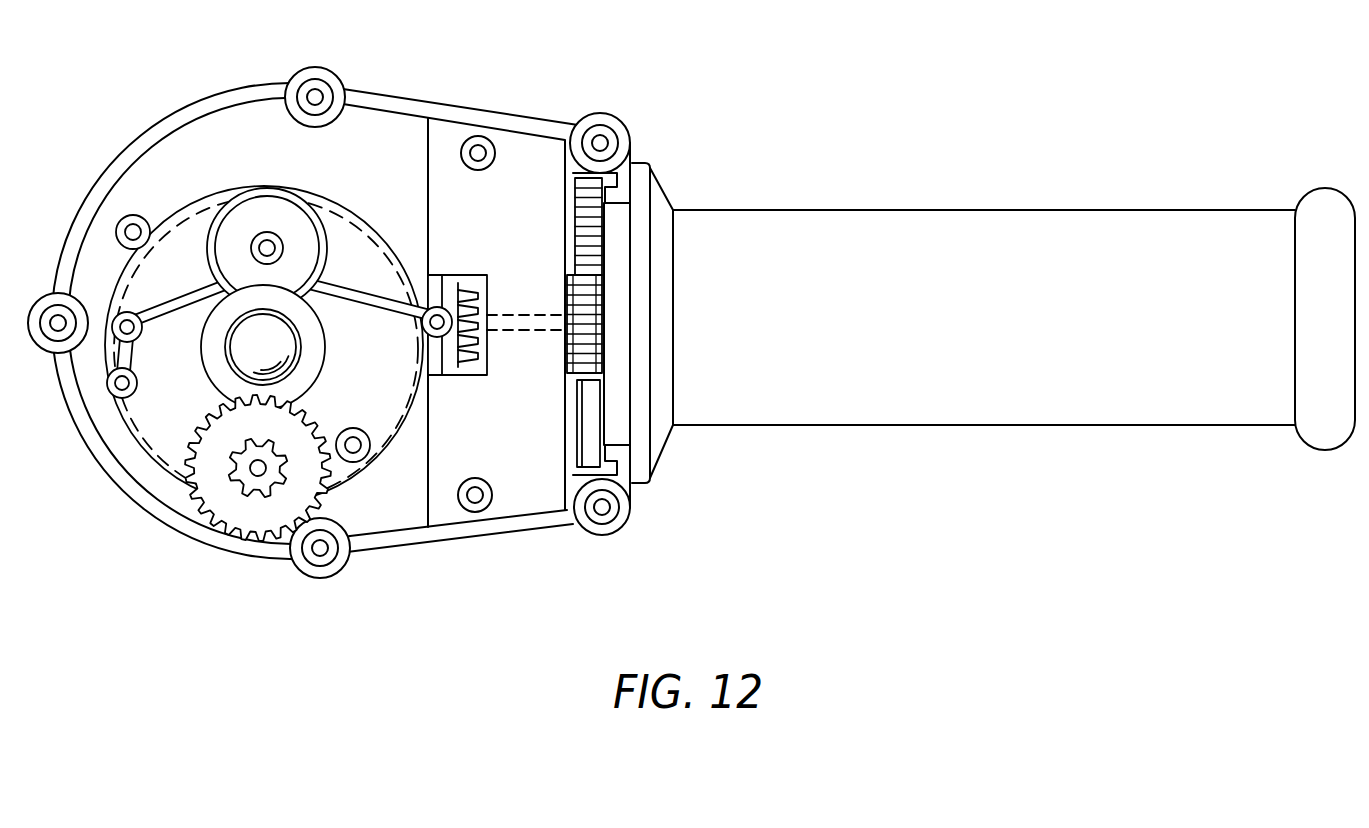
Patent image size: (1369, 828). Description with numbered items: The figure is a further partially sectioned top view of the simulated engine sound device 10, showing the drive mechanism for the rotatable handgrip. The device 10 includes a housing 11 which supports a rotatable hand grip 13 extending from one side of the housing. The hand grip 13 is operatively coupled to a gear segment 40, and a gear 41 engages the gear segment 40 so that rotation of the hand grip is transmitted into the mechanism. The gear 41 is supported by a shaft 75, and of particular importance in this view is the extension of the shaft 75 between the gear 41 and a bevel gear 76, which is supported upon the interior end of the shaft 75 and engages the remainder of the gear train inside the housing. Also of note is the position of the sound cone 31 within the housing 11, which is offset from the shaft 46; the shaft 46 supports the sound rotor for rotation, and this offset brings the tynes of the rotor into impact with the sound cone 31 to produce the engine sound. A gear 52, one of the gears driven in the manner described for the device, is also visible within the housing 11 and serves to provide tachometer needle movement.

The simulated engine sound device 10 is at (691, 305).
The housing 11 is at (368, 87).
The rotatable hand grip 13 is at (812, 208).
The sound cone 31 is at (186, 228).
The gear segment 40 is at (590, 245).
The gear 41 is at (567, 328).
The shaft 46 is at (263, 232).
The gear 52 is at (217, 510).
The shaft 75 is at (528, 332).
The bevel gear 76 is at (480, 357).